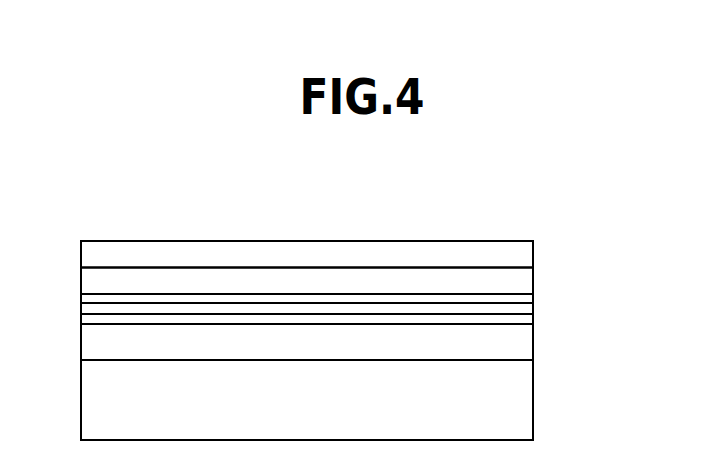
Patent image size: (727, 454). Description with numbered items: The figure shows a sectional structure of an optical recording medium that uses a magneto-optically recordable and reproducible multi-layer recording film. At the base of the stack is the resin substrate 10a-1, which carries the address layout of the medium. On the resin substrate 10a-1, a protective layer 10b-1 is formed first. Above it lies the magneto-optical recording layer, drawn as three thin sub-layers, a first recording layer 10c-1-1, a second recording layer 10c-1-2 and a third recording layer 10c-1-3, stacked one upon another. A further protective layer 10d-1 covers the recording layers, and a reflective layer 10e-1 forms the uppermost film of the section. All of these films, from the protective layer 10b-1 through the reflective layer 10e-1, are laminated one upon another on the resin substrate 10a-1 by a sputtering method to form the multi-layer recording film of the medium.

The reflective layer 10e-1 is at (535, 253).
The protective layer 10d-1 is at (535, 280).
The magneto-optical recording layer 10c-1-3 is at (535, 299).
The magneto-optical recording layer 10c-1-2 is at (535, 306).
The magneto-optical recording layer 10c-1-1 is at (535, 320).
The protective layer 10b-1 is at (535, 345).
The resin substrate 10a-1 is at (535, 380).